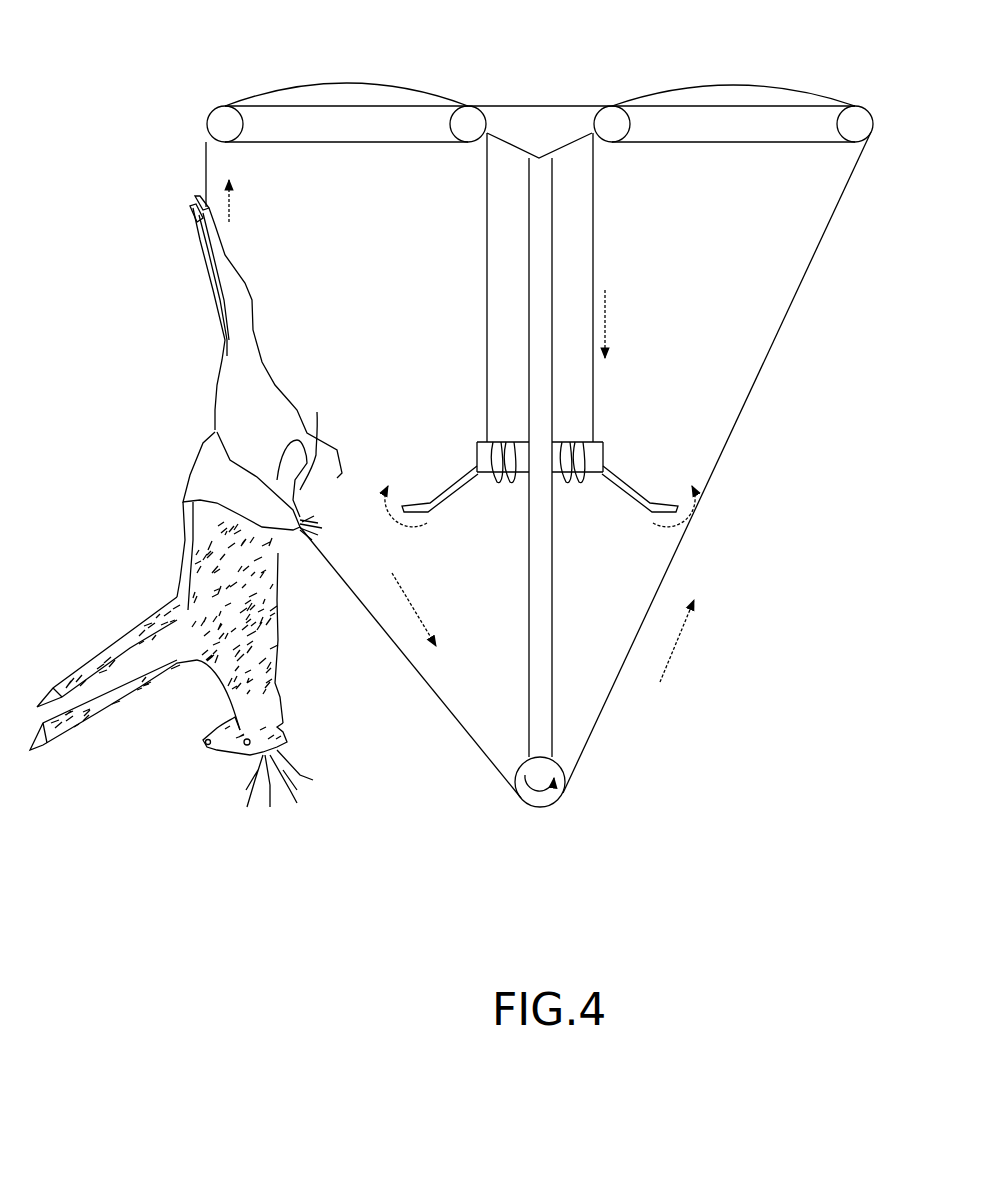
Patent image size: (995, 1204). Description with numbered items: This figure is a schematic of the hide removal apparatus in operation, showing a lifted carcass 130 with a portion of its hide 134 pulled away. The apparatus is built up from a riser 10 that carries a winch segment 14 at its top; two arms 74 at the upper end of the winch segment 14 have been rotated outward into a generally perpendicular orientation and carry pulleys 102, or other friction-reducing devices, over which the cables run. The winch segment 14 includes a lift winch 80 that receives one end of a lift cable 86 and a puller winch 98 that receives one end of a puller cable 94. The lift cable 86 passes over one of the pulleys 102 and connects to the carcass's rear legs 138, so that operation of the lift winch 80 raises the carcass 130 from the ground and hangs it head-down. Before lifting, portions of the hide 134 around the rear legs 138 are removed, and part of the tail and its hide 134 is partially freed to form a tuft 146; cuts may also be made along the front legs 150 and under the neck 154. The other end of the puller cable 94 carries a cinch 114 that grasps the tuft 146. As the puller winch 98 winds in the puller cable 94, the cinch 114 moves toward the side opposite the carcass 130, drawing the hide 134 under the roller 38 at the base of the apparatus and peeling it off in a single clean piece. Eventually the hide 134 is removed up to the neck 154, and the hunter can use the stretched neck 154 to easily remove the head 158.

The riser 10 is at (554, 642).
The winch segment 14 is at (575, 262).
The roller 38 is at (562, 795).
The arms 74 is at (752, 118).
The lift winch 80 is at (490, 455).
The lift cable 86 is at (206, 170).
The puller cable 94 is at (685, 537).
The puller winch 98 is at (608, 460).
The pulleys 102 is at (466, 118).
The cinch 114 is at (321, 438).
The carcass 130 is at (200, 547).
The hide 134 is at (215, 440).
The rear legs 138 is at (212, 258).
The tuft 146 is at (330, 532).
The front legs 150 is at (82, 713).
The neck 154 is at (257, 680).
The head 158 is at (225, 757).